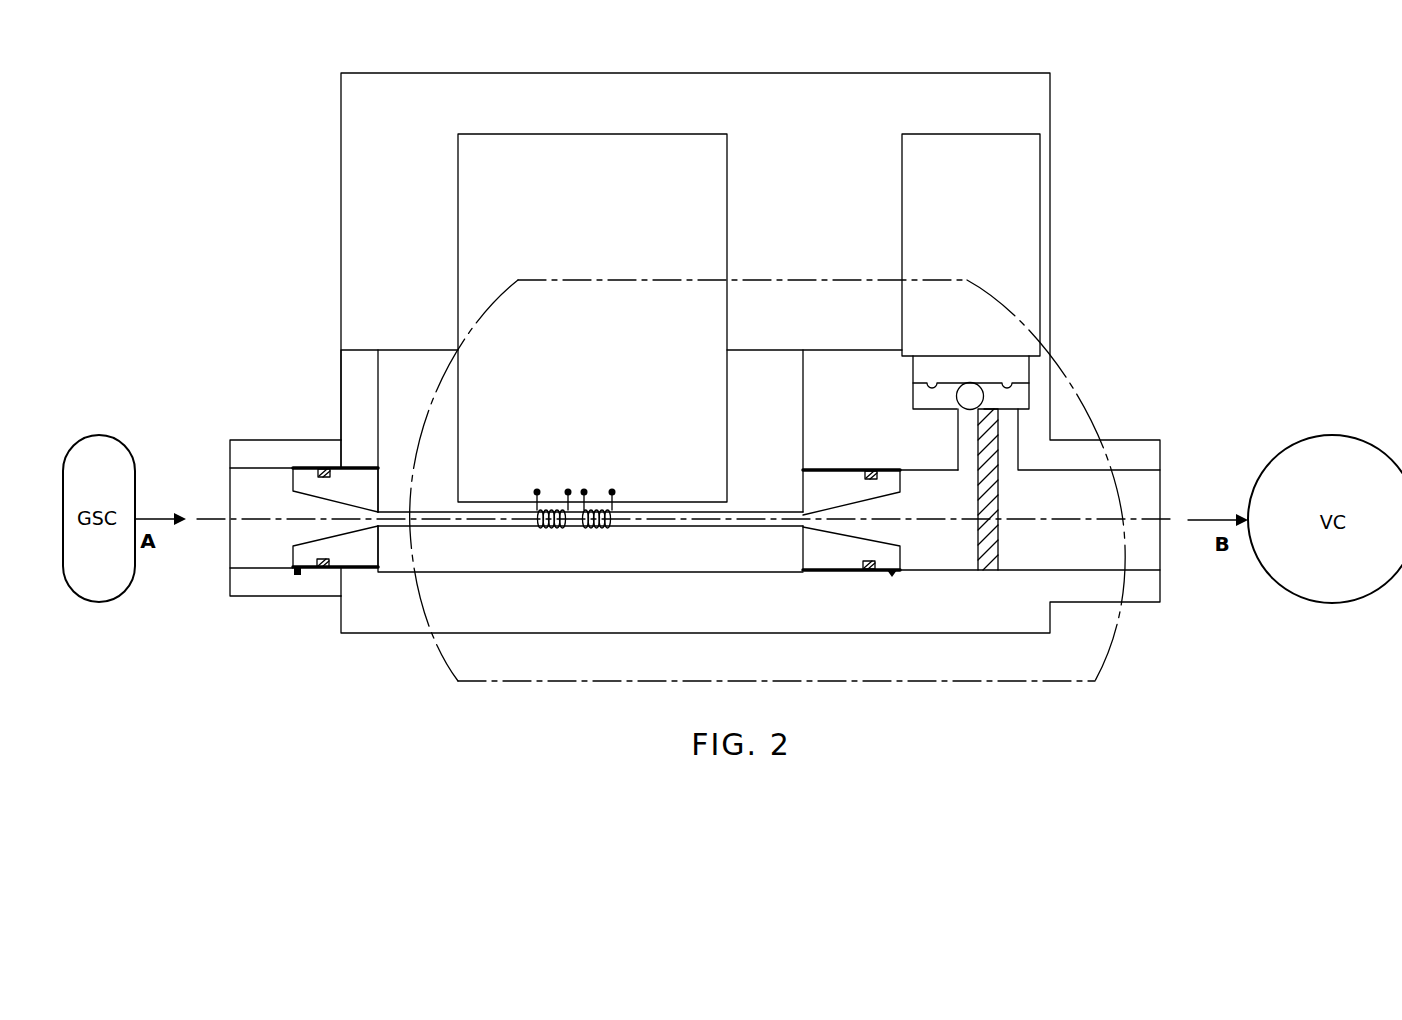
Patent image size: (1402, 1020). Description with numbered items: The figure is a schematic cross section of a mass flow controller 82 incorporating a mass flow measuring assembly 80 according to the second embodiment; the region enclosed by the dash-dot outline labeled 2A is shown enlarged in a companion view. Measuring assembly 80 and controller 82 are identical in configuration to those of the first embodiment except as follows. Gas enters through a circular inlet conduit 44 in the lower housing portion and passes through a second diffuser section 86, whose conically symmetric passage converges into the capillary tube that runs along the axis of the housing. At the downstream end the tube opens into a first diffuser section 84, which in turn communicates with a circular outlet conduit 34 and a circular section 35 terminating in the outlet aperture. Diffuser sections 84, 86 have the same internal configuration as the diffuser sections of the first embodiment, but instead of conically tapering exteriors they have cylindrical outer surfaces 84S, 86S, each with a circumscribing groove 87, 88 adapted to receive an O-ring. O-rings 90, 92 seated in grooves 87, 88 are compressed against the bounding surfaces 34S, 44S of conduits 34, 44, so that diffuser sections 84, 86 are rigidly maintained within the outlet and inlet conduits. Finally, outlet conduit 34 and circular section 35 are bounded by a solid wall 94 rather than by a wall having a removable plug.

The mass flow controller 82 is at (694, 65).
The mass flow measuring assembly 80 is at (582, 557).
The inlet conduit 44 is at (253, 556).
The bounding surface of inlet conduit 44S is at (273, 470).
The second diffuser section 86 is at (297, 575).
The cylindrical outer surface of second diffuser section 86S is at (302, 467).
The O-ring 92 is at (323, 468).
The circumscribing groove 88 is at (328, 479).
The first diffuser section 84 is at (892, 573).
The cylindrical outer surface of first diffuser section 84S is at (884, 469).
The O-ring 90 is at (869, 469).
The circumscribing groove 87 is at (860, 475).
The outlet conduit 34 is at (968, 549).
The bounding surface of outlet conduit 34S is at (908, 474).
The circular section 35 is at (971, 437).
The solid wall 94 is at (1006, 497).
The detail region of FIG. 2A is at (1095, 681).